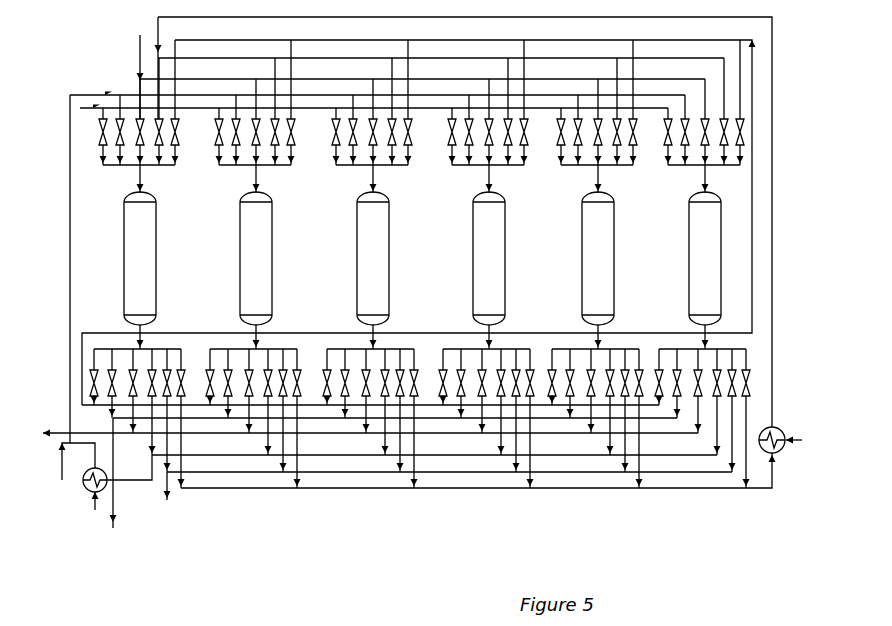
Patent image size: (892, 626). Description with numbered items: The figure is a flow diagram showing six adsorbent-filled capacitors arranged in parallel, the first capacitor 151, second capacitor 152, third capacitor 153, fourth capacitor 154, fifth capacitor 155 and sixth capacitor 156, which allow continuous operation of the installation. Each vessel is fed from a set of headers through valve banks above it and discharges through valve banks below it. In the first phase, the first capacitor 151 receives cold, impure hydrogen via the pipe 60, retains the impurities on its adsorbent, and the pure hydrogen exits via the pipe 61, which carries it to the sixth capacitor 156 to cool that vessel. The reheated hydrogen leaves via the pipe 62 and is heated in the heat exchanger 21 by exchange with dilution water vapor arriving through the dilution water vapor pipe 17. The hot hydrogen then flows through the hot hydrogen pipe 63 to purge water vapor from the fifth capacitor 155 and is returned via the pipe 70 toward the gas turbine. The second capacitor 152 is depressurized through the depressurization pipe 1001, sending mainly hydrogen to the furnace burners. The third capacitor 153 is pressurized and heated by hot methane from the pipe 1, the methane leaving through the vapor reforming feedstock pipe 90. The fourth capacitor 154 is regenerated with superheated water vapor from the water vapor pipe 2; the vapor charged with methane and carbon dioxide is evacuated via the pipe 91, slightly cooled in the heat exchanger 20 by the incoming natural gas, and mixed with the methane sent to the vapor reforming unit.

The pipe 1 is at (375, 261).
The water vapor pipe 2 is at (412, 77).
The pipe 60 is at (371, 123).
The hot hydrogen pipe 63 is at (464, 222).
The pipe 61 is at (419, 211).
The first capacitor 151 is at (138, 286).
The second capacitor 152 is at (254, 286).
The third capacitor 153 is at (371, 286).
The fourth capacitor 154 is at (487, 286).
The fifth capacitor 155 is at (596, 286).
The sixth capacitor 156 is at (703, 292).
The vapor reforming feedstock pipe 90 is at (370, 425).
The pipe 91 is at (412, 467).
The depressurization pipe 1001 is at (379, 471).
The pipe 70 is at (445, 499).
The pipe 62 is at (489, 478).
The heat exchanger 20 is at (87, 488).
The heat exchanger 21 is at (780, 430).
The dilution water vapor pipe 17 is at (806, 440).